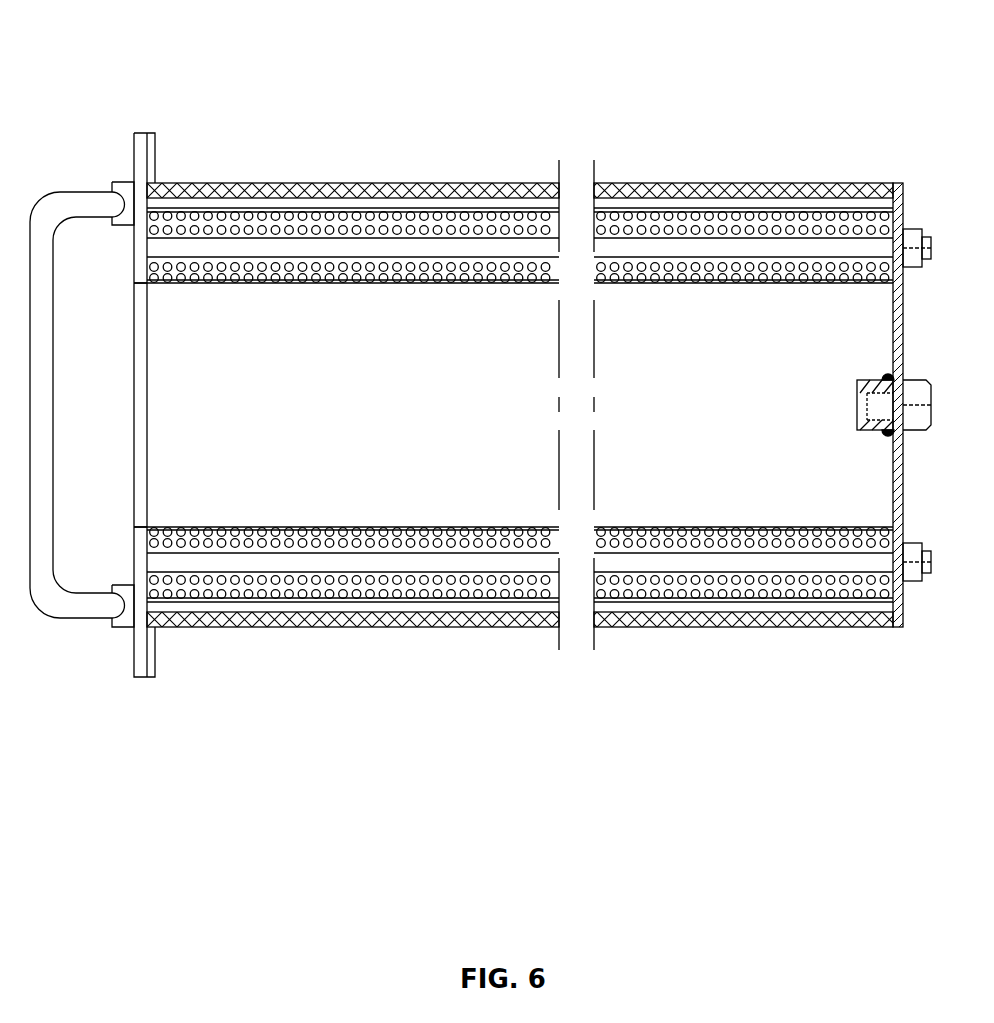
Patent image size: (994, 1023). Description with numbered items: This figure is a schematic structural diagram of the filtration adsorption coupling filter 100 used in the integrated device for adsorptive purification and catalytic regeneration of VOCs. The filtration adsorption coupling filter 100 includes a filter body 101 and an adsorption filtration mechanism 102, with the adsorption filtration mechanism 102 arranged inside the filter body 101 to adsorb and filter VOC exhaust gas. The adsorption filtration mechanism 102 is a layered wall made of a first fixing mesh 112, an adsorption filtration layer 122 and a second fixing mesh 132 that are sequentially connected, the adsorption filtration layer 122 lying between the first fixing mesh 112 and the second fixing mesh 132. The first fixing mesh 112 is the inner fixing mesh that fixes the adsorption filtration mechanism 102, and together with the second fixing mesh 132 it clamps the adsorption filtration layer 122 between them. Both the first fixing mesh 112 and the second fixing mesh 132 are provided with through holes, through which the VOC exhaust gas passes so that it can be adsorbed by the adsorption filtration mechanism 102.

The filtration adsorption coupling filter 100 is at (482, 703).
The filter body 101 is at (182, 183).
The adsorption filtration mechanism 102 is at (483, 63).
The first fixing mesh 112 is at (503, 278).
The adsorption filtration layer 122 is at (392, 227).
The second fixing mesh 132 is at (320, 210).